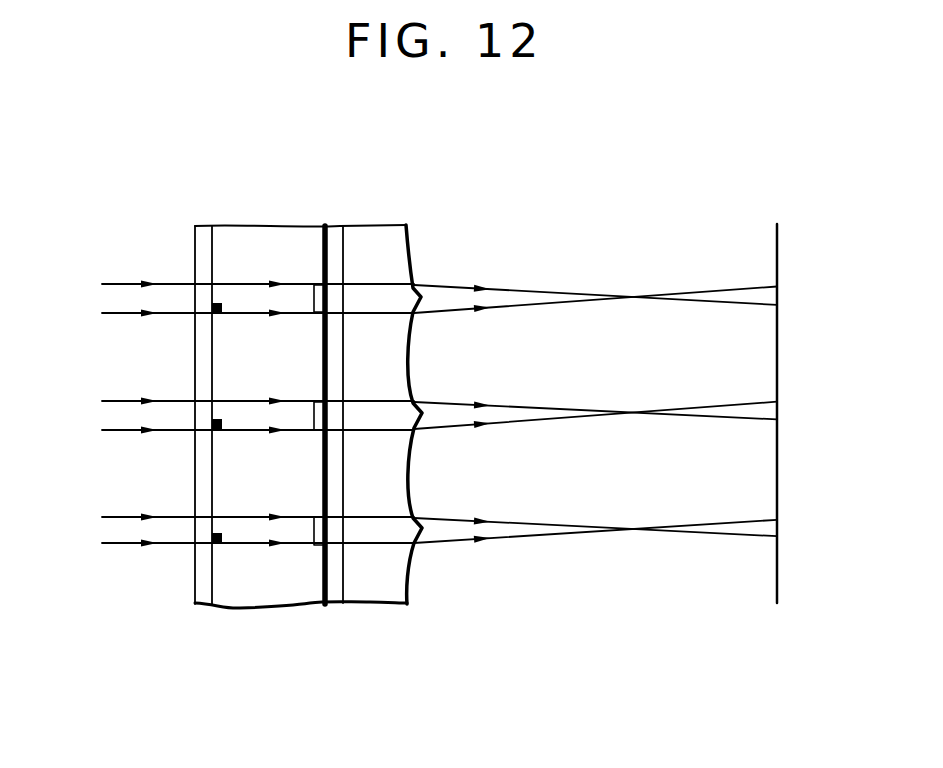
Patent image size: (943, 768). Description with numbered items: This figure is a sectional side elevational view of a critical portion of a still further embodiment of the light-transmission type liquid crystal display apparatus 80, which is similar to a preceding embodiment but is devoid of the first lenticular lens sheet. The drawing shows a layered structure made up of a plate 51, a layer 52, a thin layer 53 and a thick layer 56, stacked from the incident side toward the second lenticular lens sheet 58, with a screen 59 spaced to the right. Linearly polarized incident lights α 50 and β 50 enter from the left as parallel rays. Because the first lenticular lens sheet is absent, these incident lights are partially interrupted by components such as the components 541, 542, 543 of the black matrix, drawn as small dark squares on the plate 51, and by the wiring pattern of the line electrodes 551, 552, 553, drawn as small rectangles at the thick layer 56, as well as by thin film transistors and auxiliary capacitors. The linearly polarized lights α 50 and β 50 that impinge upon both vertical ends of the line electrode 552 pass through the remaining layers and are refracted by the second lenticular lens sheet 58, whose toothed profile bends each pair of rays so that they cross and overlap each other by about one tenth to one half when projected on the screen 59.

The liquid crystal display apparatus 80 is at (277, 203).
The linearly polarized lights α and β 50 is at (410, 414).
The transparent substrate plate 51 is at (200, 606).
The spacer layer 52 is at (305, 597).
The thin transparent layer 53 is at (337, 597).
The opaque mask layer 56 is at (329, 240).
The second lenticular lens sheet 58 is at (385, 595).
The screen 59 is at (779, 240).
The component of the black matrix 541 is at (218, 303).
The component of the black matrix 542 is at (212, 424).
The component of the black matrix 543 is at (222, 545).
The line electrode 551 is at (323, 302).
The line electrode 552 is at (316, 420).
The line electrode 553 is at (316, 532).